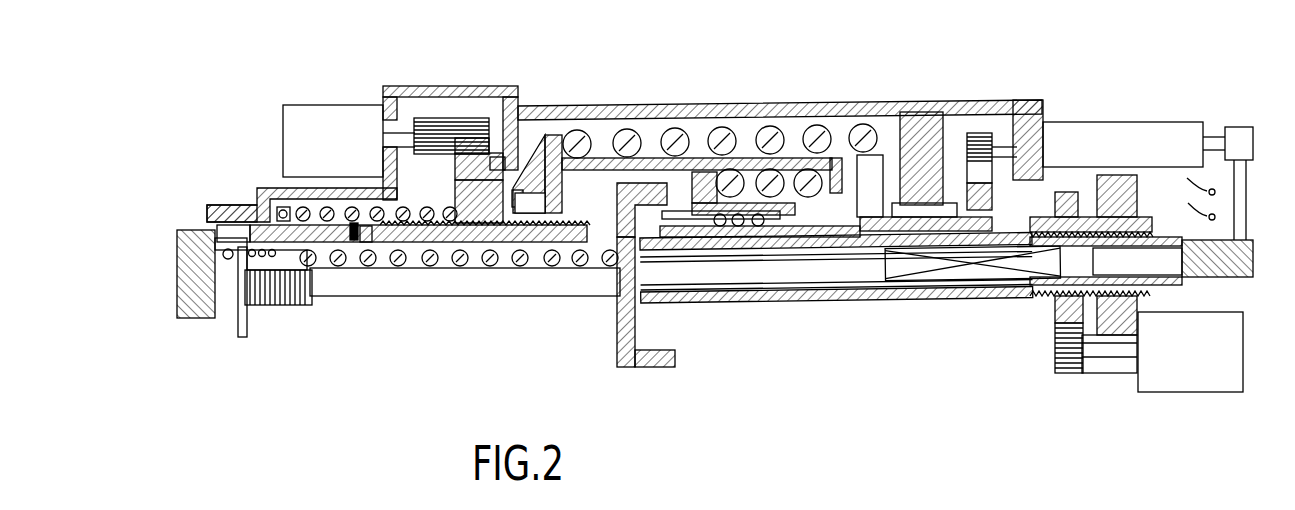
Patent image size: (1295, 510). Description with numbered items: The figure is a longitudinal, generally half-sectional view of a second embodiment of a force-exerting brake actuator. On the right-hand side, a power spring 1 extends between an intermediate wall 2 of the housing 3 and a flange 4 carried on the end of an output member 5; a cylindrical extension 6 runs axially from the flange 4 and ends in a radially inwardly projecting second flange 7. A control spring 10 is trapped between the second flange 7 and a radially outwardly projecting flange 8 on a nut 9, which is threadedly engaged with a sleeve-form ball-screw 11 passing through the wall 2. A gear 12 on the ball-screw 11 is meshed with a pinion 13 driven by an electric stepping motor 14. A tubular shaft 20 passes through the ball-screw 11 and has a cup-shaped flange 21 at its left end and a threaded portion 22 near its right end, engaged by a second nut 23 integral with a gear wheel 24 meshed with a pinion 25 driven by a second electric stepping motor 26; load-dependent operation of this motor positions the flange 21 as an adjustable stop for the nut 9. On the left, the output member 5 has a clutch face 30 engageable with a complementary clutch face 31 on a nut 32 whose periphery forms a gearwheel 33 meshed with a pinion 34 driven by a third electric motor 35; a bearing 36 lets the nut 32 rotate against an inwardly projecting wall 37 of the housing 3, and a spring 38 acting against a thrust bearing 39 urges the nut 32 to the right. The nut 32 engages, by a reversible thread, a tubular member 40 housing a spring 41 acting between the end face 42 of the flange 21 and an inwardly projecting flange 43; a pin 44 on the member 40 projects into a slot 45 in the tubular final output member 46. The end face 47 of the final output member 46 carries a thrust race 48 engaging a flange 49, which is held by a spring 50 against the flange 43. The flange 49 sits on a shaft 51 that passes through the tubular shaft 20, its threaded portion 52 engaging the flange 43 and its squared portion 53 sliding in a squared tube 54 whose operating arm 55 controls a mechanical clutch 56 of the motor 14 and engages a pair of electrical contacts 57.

The power spring 1 is at (782, 128).
The intermediate wall 2 is at (915, 138).
The housing 3 is at (681, 103).
The flange 4 is at (562, 183).
The output member 5 is at (532, 207).
The cylindrical extension 6 is at (604, 162).
The second flange 7 is at (842, 173).
The flange 8 is at (701, 175).
The nut 9 is at (752, 216).
The control spring 10 is at (755, 170).
The ball-screw 11 is at (845, 239).
The gear 12 is at (992, 192).
The pinion 13 is at (980, 140).
The electric stepping motor 14 is at (1116, 155).
The shaft 20 is at (800, 260).
The cup-shaped flange 21 is at (653, 358).
The threaded portion 22 is at (1066, 236).
The second nut 23 is at (1120, 299).
The gear wheel 24 is at (1063, 202).
The pinion 25 is at (1055, 363).
The second electric stepping motor 26 is at (1176, 367).
The clutch face 30 is at (514, 173).
The clutch face 31 is at (519, 259).
The nut 32 is at (478, 197).
The gearwheel 33 is at (467, 165).
The pinion 34 is at (462, 118).
The third electric motor 35 is at (316, 151).
The bearing 36 is at (504, 158).
The wall 37 is at (522, 160).
The spring 38 is at (317, 207).
The thrust bearing 39 is at (278, 208).
The tubular member 40 is at (425, 245).
The spring 41 is at (578, 260).
The end face 42 is at (680, 200).
The flange 43 is at (288, 263).
The pin 44 is at (358, 242).
The slot 45 is at (331, 242).
The final output member 46 is at (200, 293).
The end face 47 is at (193, 240).
The thrust race 48 is at (225, 233).
The flange 49 is at (238, 278).
The spring 50 is at (262, 288).
The shaft 51 is at (621, 273).
The threaded portion 52 is at (303, 307).
The squared portion 53 is at (963, 268).
The squared tube 54 is at (927, 254).
The operating arm 55 is at (1246, 228).
The mechanical clutch 56 is at (1238, 138).
The electrical contacts 57 is at (1215, 200).